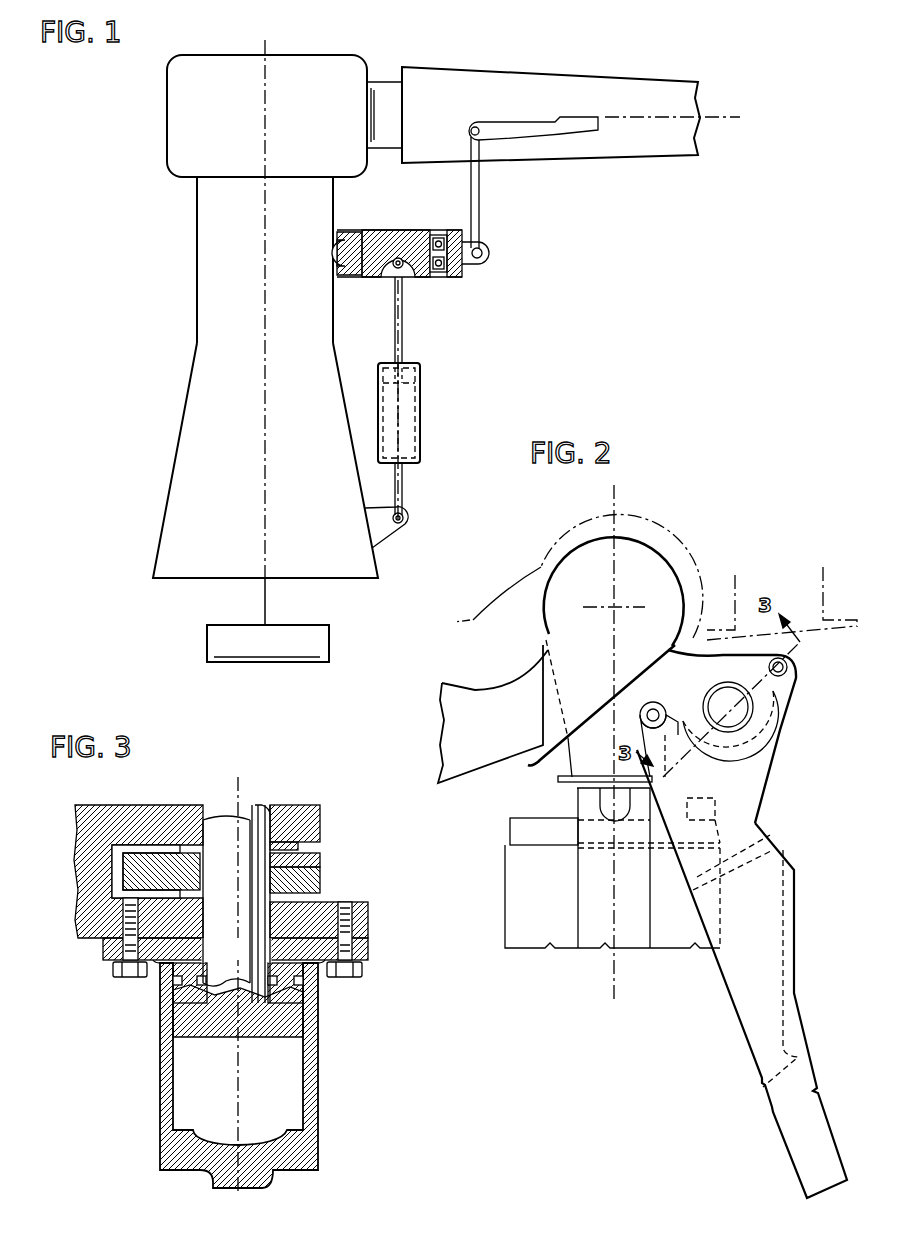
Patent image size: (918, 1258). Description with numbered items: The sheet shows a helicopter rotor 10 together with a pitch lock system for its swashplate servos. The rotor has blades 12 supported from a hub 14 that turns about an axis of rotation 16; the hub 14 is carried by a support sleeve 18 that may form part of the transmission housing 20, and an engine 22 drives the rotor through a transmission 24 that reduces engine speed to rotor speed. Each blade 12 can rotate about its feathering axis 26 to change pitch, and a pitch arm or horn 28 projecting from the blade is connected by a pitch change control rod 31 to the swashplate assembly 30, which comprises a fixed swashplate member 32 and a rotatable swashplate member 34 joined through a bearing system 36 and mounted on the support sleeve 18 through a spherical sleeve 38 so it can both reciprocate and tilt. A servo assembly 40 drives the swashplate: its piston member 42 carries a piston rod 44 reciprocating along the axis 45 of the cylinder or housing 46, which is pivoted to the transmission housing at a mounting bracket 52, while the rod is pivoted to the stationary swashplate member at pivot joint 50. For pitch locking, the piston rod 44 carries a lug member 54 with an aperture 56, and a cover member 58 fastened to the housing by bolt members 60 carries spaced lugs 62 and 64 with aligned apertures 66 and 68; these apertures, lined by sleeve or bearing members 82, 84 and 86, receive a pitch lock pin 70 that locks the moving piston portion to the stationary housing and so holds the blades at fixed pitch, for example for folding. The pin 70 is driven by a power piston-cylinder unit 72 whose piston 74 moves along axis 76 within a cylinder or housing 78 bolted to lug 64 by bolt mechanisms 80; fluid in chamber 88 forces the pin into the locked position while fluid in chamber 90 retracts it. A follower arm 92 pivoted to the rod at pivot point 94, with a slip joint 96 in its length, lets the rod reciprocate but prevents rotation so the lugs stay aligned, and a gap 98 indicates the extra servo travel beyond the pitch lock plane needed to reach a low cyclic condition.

In FIG. 1, the helicopter rotor 10 is at (395, 48).
In FIG. 1, the blades 12 is at (598, 80).
In FIG. 1, the hub 14 is at (293, 56).
In FIG. 1, the axis of rotation 16 is at (265, 257).
In FIG. 1, the support sleeve 18 is at (197, 227).
In FIG. 1, the transmission housing 20 is at (170, 476).
In FIG. 1, the engine 22 is at (338, 638).
In FIG. 1, the transmission 24 is at (282, 524).
In FIG. 1, the feathering axis 26 is at (712, 118).
In FIG. 1, the pitch arm or horn 28 is at (587, 133).
In FIG. 1, the swashplate assembly 30 is at (386, 224).
In FIG. 2, the swashplate assembly 30 is at (562, 518).
In FIG. 1, the lever 31 is at (479, 190).
In FIG. 1, the fixed swashplate member 32 is at (404, 231).
In FIG. 2, the fixed swashplate member 32 is at (480, 688).
In FIG. 1, the rotatable swashplate member 34 is at (460, 270).
In FIG. 1, the bearing system 36 is at (443, 233).
In FIG. 1, the spherical sleeve 38 is at (356, 231).
In FIG. 1, the servo assembly 40 is at (432, 375).
In FIG. 2, the servo assembly 40 is at (500, 828).
In FIG. 1, the piston member 42 is at (409, 389).
In FIG. 1, the piston rod 44 is at (404, 316).
In FIG. 2, the piston rod 44 is at (637, 923).
In FIG. 1, the cylinder axis 45 is at (403, 423).
In FIG. 2, the cylinder axis 45 is at (615, 975).
In FIG. 1, the cylinder or housing 46 is at (418, 457).
In FIG. 2, the cylinder or housing 46 is at (517, 900).
In FIG. 1, the pivot joint 50 is at (393, 268).
In FIG. 2, the pivot joint 50 is at (678, 557).
In FIG. 1, the mounting bracket 52 is at (406, 518).
In FIG. 2, the lug member 54 is at (767, 688).
In FIG. 3, the lug member 54 is at (305, 873).
In FIG. 3, the aperture 56 is at (262, 880).
In FIG. 2, the cover member 58 is at (540, 830).
In FIG. 2, the bolt members 60 is at (707, 808).
In FIG. 3, the lug 62 is at (307, 822).
In FIG. 2, the lug 64 is at (783, 723).
In FIG. 3, the lug 64 is at (360, 918).
In FIG. 3, the aperture 66 is at (258, 808).
In FIG. 3, the aperture 68 is at (265, 930).
In FIG. 2, the pitch lock pin 70 is at (740, 712).
In FIG. 3, the pitch lock pin 70 is at (218, 832).
In FIG. 3, the power piston-cylinder unit 72 is at (330, 1093).
In FIG. 3, the piston 74 is at (320, 1038).
In FIG. 3, the axis 76 is at (240, 1065).
In FIG. 3, the cylinder or housing 78 is at (160, 1084).
In FIG. 2, the bolt mechanisms 80 is at (797, 660).
In FIG. 3, the bolt mechanisms 80 is at (130, 980).
In FIG. 3, the sleeve or bearing member 82 is at (286, 806).
In FIG. 3, the sleeve or bearing member 84 is at (315, 858).
In FIG. 3, the sleeve or bearing member 86 is at (268, 907).
In FIG. 3, the chamber 88 is at (220, 1109).
In FIG. 3, the chamber 90 is at (164, 1012).
In FIG. 2, the follower arm 92 is at (794, 993).
In FIG. 2, the pivot point 94 is at (655, 706).
In FIG. 2, the slip joint 96 is at (807, 1167).
In FIG. 2, the gap 98 is at (565, 818).